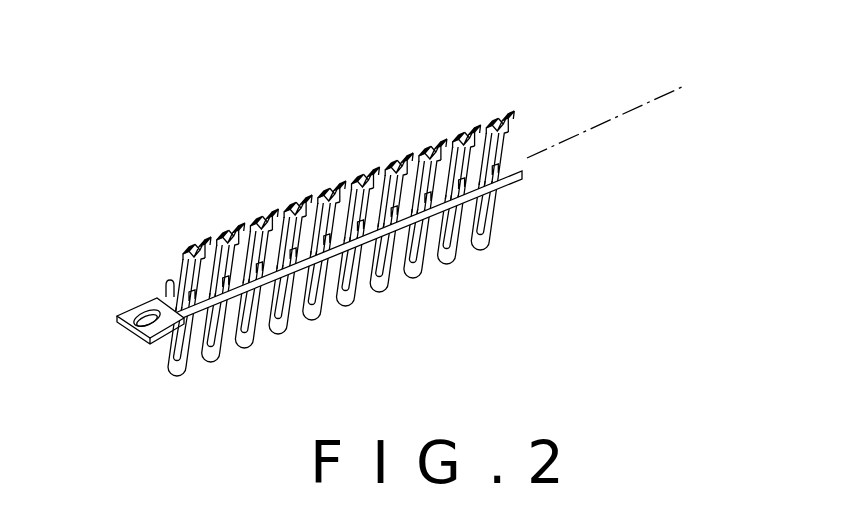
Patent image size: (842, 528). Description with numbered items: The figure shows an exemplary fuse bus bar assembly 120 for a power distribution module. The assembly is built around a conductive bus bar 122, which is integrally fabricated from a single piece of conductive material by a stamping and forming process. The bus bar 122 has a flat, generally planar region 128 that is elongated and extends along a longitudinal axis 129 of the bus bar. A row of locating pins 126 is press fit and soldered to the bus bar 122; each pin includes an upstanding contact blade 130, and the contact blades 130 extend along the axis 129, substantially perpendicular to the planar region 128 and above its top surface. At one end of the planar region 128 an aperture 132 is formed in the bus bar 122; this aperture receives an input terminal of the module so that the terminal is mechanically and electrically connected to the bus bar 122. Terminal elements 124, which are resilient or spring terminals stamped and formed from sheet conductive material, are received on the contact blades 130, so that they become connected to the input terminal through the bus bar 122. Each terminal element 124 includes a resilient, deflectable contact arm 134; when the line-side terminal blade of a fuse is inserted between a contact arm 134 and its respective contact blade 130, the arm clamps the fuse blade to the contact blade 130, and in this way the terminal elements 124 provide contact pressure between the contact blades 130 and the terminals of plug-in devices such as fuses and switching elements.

The fuse bus bar assembly 120 is at (497, 44).
The conductive bus bar 122 is at (273, 294).
The terminal elements 124 is at (355, 233).
The locating pins 126 is at (341, 302).
The planar region 128 is at (163, 286).
The longitudinal axis 129 is at (593, 124).
The contact blades 130 is at (328, 153).
The aperture 132 is at (137, 328).
The contact arm 134 is at (484, 122).